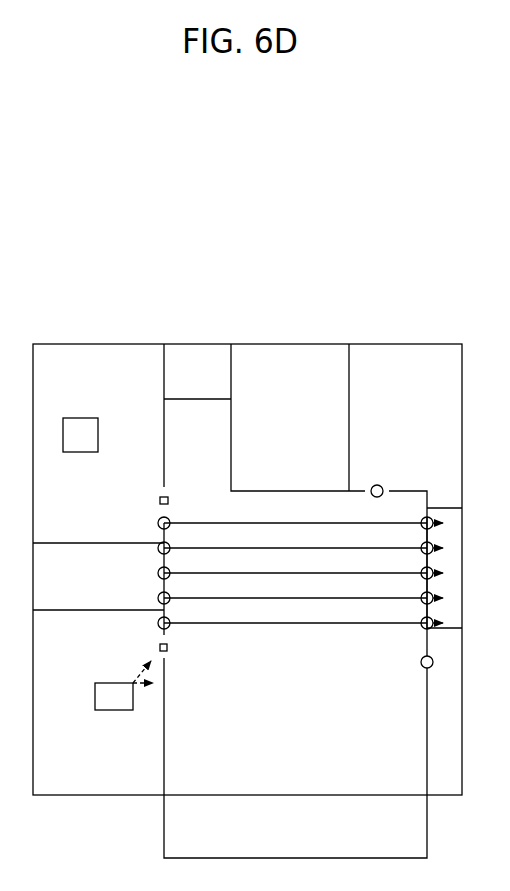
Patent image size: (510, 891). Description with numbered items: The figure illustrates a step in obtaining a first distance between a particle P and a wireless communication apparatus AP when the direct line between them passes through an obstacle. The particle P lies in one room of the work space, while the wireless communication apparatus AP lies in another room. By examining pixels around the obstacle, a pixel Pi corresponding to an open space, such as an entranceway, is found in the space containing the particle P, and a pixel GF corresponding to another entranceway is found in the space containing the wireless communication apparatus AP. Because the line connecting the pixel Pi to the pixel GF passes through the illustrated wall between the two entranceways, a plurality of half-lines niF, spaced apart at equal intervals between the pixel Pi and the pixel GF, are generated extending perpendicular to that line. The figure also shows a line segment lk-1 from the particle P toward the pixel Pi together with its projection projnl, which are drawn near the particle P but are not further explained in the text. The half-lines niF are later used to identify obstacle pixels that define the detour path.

The wireless communication apparatus AP is at (80, 435).
The pixel GF is at (175, 503).
The half-lines niF is at (300, 583).
The pixel Pi is at (175, 652).
The particle P is at (114, 696).
The vector l_(k-1) lk-1 is at (130, 666).
The projection proj_n l of vector onto normal projnl is at (176, 687).